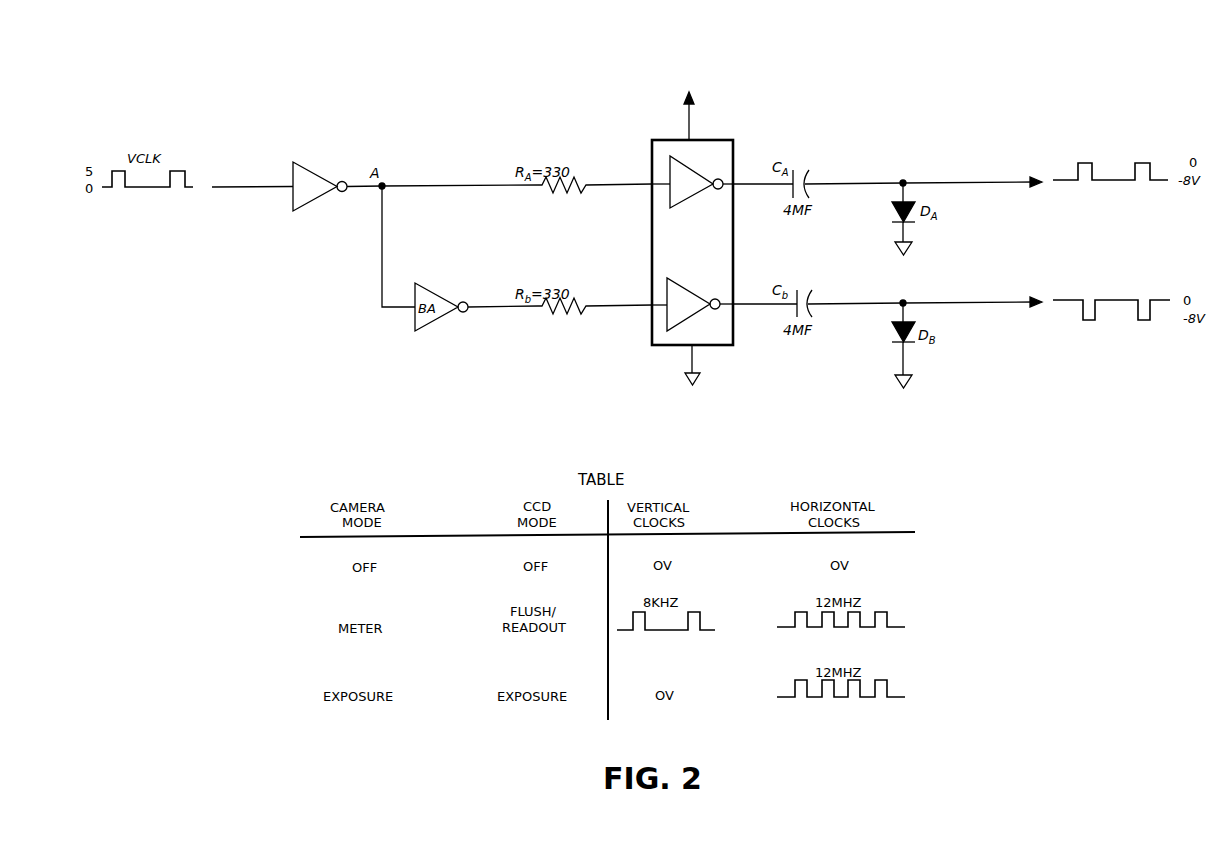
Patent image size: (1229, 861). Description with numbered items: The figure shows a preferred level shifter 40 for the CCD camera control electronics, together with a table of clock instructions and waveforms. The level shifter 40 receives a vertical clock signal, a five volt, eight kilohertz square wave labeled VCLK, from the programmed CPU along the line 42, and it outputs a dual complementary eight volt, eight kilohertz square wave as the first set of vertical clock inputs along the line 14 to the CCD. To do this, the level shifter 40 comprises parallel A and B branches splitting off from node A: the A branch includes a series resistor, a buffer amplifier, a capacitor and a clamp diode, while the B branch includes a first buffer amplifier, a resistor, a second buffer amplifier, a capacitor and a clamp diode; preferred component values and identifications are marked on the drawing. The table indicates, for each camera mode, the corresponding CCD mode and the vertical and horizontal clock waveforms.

The level shifter 40 is at (456, 158).
The line 42 is at (256, 186).
The line 14 is at (999, 193).